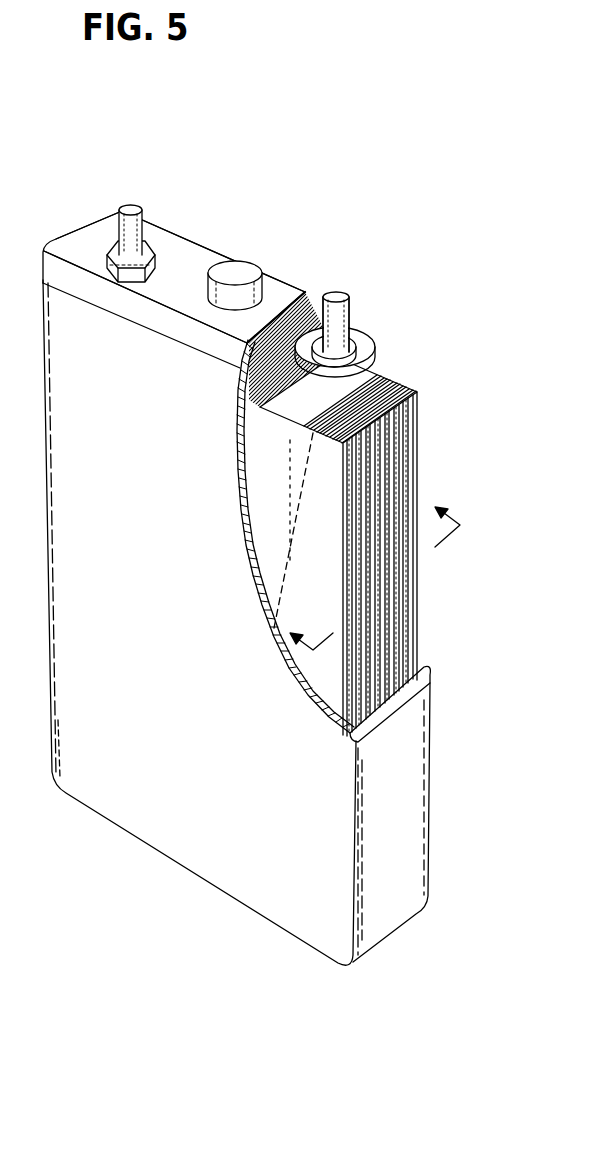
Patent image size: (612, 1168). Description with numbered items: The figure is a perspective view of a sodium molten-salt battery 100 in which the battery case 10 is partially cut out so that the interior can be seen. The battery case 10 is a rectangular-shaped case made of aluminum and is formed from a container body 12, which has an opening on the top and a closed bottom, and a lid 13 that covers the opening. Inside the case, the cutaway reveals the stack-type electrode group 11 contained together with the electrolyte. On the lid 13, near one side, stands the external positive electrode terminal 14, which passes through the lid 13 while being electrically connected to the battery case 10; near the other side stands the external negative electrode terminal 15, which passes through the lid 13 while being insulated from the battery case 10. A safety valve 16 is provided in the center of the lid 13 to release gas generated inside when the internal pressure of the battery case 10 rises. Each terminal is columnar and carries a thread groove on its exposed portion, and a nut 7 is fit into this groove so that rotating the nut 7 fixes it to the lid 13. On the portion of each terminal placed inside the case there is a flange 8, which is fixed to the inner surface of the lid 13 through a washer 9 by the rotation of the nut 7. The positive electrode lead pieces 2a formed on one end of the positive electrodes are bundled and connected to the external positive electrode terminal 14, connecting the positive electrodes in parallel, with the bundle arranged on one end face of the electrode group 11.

The sodium molten-salt battery 100 is at (339, 143).
The battery case 10 is at (217, 162).
The container body 12 is at (154, 453).
The lid 13 is at (180, 251).
The nut 7 is at (107, 243).
The external negative electrode terminal 15 is at (123, 207).
The safety valve 16 is at (240, 272).
The washer 9 is at (317, 329).
The external positive electrode terminal 14 is at (336, 298).
The flange 8 is at (360, 340).
The positive electrode lead piece 2a is at (383, 381).
The electrode group 11 is at (393, 460).